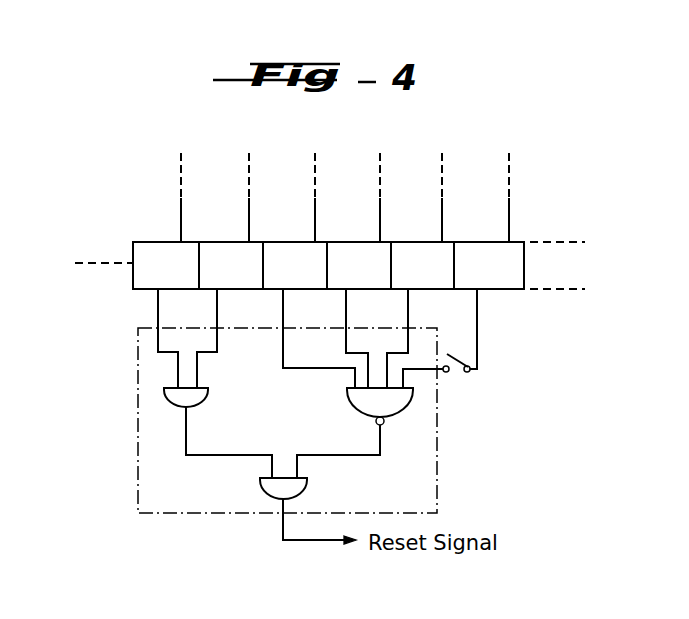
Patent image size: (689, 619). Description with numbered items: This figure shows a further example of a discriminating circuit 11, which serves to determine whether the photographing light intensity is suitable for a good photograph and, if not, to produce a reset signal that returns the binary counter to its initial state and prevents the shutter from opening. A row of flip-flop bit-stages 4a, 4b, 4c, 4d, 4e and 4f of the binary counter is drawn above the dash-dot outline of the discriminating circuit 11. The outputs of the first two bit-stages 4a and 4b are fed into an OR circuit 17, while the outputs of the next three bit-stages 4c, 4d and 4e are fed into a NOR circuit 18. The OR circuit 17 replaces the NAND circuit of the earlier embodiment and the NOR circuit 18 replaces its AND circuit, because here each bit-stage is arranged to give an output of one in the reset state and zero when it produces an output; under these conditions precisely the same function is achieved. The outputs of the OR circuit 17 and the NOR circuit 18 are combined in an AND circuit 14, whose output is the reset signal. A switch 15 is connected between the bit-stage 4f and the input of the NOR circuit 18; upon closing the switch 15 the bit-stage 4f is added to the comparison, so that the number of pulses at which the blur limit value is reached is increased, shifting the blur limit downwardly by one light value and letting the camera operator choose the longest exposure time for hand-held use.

The bit-stage 4a is at (167, 248).
The bit-stage 4b is at (225, 248).
The bit-stage 4c is at (290, 248).
The bit-stage 4d is at (353, 248).
The bit-stage 4e is at (417, 248).
The bit-stage 4f is at (482, 248).
The discriminating circuit 11 is at (156, 421).
The AND circuit 14 is at (303, 483).
The switch 15 is at (449, 358).
The OR circuit 17 is at (203, 395).
The NOR circuit 18 is at (348, 393).